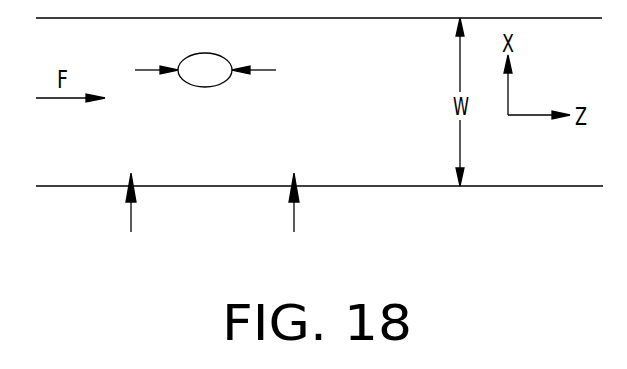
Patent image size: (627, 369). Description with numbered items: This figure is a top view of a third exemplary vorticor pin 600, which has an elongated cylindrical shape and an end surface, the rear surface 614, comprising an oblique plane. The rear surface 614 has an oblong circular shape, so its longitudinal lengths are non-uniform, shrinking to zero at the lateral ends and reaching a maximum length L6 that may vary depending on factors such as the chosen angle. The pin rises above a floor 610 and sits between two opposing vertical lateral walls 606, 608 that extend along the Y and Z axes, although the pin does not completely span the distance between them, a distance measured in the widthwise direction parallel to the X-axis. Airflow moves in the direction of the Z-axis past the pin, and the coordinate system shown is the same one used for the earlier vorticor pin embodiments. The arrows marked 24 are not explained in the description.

The vorticor pin 600 is at (218, 55).
The rear surface 614 is at (200, 63).
The lateral wall 608 is at (347, 18).
The lateral wall 606 is at (430, 186).
The floor 610 is at (400, 116).
The light source / emitter arrows 24 is at (163, 223).
The maximum length L6 is at (263, 70).